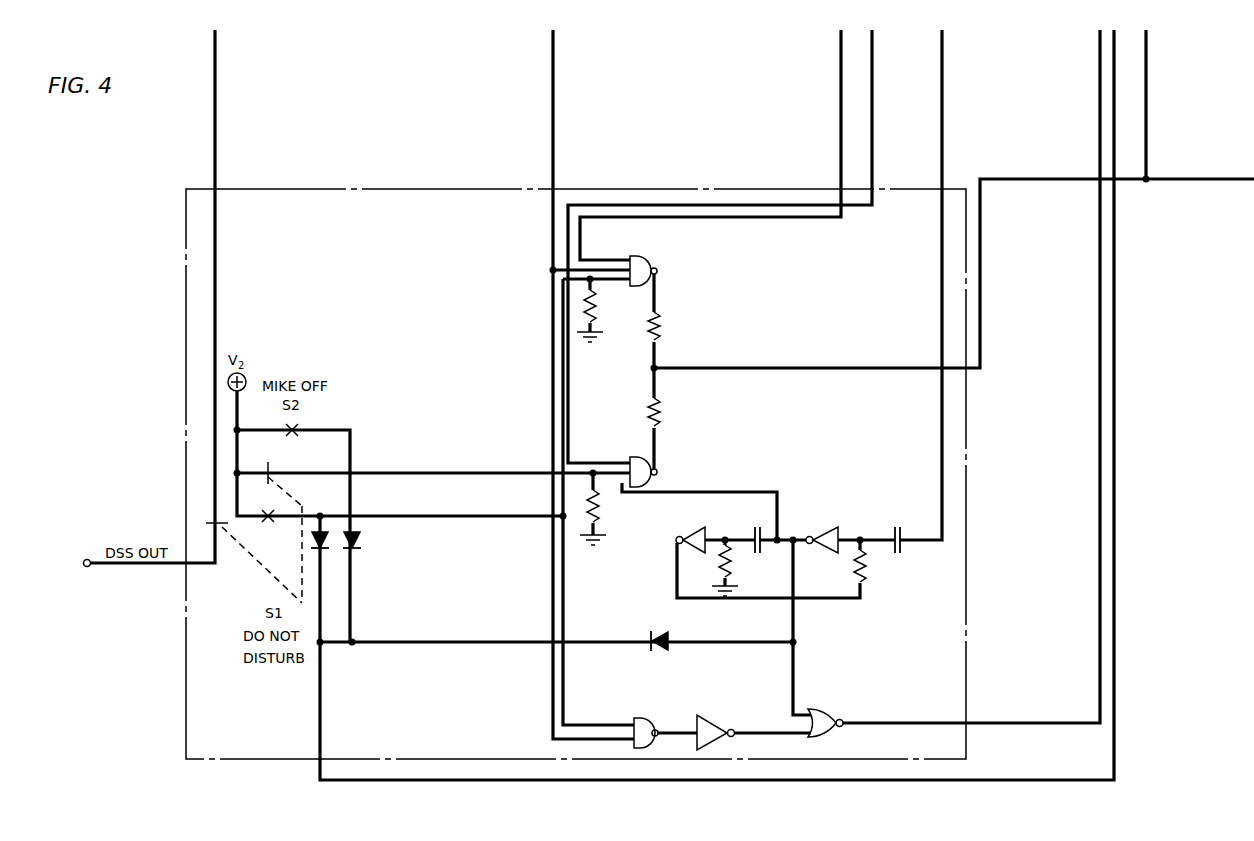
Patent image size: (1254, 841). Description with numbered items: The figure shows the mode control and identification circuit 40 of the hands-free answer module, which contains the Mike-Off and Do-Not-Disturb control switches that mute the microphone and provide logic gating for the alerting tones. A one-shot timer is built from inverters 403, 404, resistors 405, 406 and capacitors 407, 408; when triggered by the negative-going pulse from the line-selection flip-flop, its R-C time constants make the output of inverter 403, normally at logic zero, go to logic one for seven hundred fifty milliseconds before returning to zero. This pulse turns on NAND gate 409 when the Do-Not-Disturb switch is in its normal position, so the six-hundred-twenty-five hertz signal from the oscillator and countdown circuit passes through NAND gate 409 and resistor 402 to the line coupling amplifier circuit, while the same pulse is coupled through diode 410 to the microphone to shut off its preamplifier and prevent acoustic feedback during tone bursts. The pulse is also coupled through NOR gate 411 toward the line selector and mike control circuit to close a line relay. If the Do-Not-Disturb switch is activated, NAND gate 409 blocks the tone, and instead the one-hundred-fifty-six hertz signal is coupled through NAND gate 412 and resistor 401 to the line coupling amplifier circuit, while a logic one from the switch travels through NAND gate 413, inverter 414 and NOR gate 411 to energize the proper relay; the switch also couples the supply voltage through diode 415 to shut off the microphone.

The mode control and identification circuit 40 is at (968, 581).
The resistor 401 is at (660, 328).
The resistor 402 is at (660, 413).
The inverter 403 is at (832, 527).
The inverter 404 is at (700, 527).
The resistor 405 is at (878, 566).
The resistor 406 is at (739, 570).
The capacitor 407 is at (897, 531).
The capacitor 408 is at (757, 531).
The NAND gate 409 is at (643, 456).
The diode 410 is at (660, 631).
The NOR gate 411 is at (831, 721).
The NAND gate 412 is at (641, 257).
The NAND gate 413 is at (648, 718).
The inverter 414 is at (715, 722).
The diode 415 is at (329, 549).